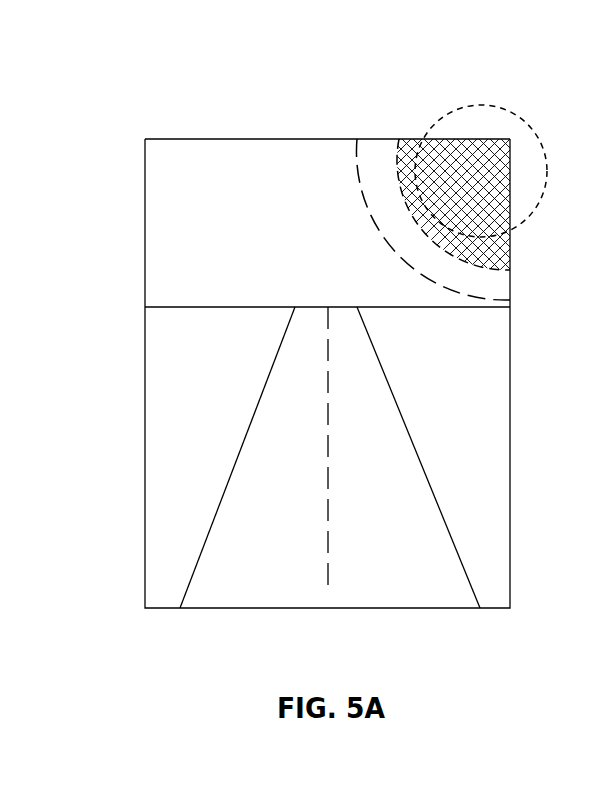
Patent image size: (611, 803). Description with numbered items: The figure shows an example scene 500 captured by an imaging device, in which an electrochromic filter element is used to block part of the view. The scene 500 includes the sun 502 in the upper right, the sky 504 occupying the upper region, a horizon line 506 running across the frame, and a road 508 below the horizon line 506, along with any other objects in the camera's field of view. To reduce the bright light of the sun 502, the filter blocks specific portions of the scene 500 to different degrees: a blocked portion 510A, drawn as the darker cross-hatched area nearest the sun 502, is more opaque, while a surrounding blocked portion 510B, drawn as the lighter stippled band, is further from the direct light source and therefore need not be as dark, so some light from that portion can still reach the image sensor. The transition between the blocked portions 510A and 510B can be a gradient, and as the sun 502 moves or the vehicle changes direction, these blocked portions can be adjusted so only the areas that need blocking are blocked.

The scene 500 is at (173, 139).
The sun 502 is at (524, 118).
The sky 504 is at (157, 237).
The horizon line 506 is at (195, 307).
The road 508 is at (393, 476).
The blocked portion 510A is at (397, 140).
The blocked portion 510B is at (366, 145).